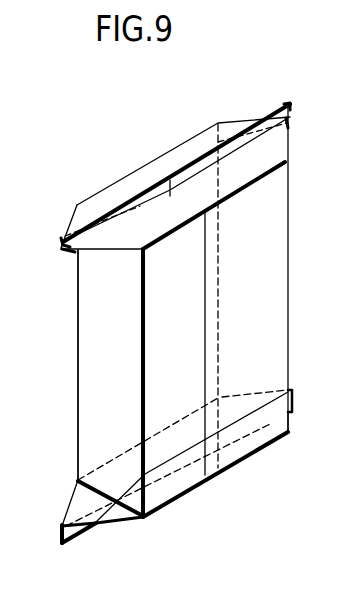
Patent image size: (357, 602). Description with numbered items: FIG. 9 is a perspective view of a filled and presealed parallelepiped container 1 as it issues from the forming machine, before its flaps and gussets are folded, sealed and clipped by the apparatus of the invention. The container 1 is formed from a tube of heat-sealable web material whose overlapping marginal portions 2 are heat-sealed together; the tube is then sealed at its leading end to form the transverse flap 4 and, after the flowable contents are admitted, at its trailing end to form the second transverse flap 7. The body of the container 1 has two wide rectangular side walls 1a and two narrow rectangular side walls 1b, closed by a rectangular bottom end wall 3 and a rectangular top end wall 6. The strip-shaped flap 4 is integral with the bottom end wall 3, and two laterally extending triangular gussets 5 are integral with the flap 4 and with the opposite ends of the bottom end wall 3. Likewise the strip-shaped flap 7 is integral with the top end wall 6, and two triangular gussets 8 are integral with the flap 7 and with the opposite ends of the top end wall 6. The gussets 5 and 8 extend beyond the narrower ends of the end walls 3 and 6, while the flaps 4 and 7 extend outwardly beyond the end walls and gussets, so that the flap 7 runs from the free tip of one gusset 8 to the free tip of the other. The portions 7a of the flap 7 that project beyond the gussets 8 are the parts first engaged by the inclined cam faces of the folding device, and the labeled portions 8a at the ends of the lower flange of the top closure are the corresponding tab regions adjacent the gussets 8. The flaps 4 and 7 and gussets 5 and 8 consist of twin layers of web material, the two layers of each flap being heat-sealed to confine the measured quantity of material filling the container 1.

The parallelepiped container 1 is at (62, 355).
The wide rectangular side wall 1a is at (276, 285).
The narrow rectangular side wall 1b is at (86, 398).
The overlapping marginal portions 2 is at (205, 322).
The bottom end wall 3 is at (190, 492).
The transverse flap 4 is at (77, 533).
The triangular gusset 5 is at (77, 512).
The top end wall 6 is at (133, 182).
The second transverse flap 7 is at (188, 167).
The flap end portion 7a is at (283, 101).
The triangular gusset 8 is at (108, 242).
The flange tab 8a is at (288, 128).